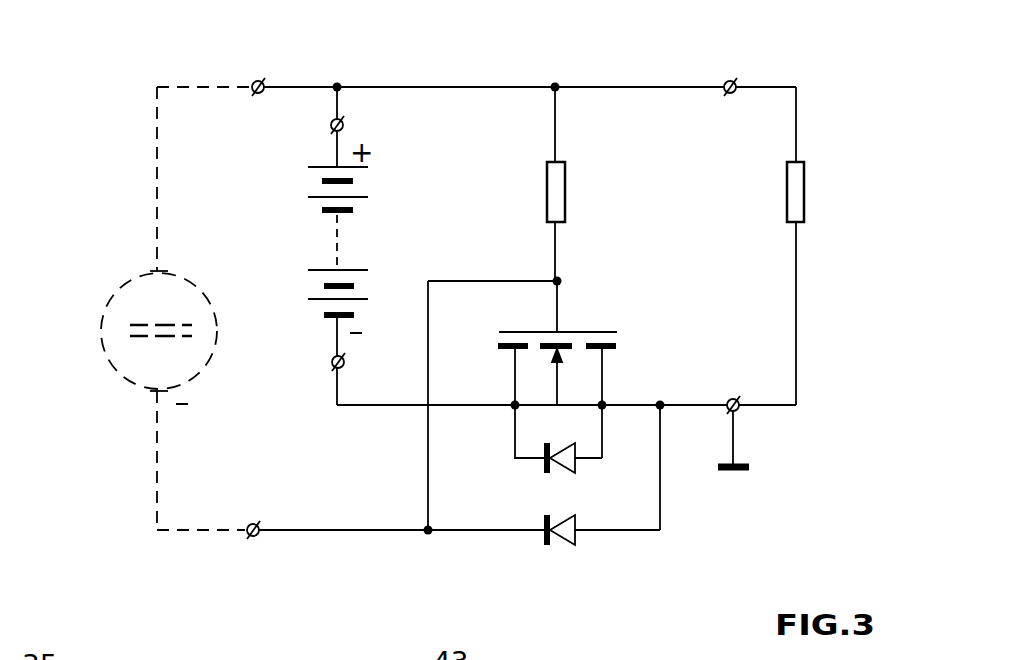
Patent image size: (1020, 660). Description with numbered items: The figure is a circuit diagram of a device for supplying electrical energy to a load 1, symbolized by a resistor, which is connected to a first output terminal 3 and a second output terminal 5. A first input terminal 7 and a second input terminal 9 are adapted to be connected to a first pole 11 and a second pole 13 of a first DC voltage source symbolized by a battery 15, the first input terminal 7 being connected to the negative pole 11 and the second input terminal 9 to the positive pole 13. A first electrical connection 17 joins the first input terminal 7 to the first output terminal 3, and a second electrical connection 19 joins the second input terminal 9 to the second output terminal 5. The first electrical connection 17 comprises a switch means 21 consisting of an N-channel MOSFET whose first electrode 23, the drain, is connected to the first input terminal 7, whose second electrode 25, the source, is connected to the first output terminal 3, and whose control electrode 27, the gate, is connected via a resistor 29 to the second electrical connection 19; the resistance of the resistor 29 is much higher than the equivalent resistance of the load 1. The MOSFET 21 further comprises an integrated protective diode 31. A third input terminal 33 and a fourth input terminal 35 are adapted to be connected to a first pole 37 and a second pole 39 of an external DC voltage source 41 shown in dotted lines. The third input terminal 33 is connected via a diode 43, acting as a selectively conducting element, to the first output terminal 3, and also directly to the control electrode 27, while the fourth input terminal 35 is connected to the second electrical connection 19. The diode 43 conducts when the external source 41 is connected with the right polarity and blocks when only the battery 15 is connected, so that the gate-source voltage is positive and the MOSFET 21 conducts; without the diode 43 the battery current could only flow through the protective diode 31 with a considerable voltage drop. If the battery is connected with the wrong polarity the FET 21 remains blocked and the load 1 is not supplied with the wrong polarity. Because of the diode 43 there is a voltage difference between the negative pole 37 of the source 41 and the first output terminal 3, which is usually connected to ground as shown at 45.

The load 1 is at (803, 190).
The first output terminal 3 is at (733, 398).
The second output terminal 5 is at (732, 82).
The first input terminal 7 is at (332, 366).
The second input terminal 9 is at (343, 125).
The first pole 11 is at (322, 316).
The second pole 13 is at (305, 170).
The battery 15 is at (368, 240).
The first electrical connection 17 is at (383, 408).
The second electrical connection 19 is at (445, 85).
The switch means 21 is at (556, 375).
The first electrode 23 is at (497, 346).
The second electrode 25 is at (620, 346).
The control electrode 27 is at (605, 330).
The resistor 29 is at (547, 190).
The integrated protective diode 31 is at (545, 475).
The third input terminal 33 is at (255, 538).
The fourth input terminal 35 is at (255, 80).
The first pole 37 is at (150, 392).
The second pole 39 is at (152, 270).
The external DC voltage source 41 is at (100, 330).
The diode 43 is at (560, 548).
The ground 45 is at (755, 466).